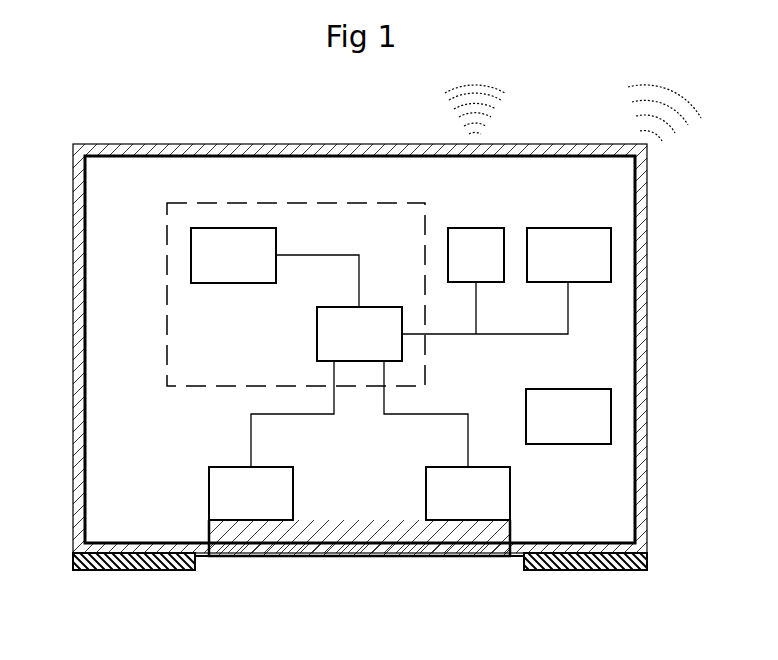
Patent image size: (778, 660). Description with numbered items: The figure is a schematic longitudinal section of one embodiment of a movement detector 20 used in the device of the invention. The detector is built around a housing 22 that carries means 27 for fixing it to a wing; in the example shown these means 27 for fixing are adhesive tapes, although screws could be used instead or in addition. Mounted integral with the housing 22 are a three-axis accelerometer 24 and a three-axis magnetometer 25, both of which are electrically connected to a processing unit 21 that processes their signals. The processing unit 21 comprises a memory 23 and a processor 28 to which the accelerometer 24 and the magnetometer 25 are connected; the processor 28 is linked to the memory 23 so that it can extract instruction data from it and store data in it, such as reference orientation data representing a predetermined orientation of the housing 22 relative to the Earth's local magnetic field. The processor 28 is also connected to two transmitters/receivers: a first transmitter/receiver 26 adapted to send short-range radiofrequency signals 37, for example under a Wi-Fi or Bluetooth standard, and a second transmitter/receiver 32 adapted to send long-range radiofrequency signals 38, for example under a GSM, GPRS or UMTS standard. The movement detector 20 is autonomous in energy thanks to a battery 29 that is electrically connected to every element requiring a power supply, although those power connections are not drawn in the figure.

The movement detector 20 is at (389, 348).
The processing unit 21 is at (319, 275).
The housing 22 is at (73, 316).
The memory 23 is at (233, 255).
The three-axis accelerometer 24 is at (251, 493).
The three-axis magnetometer 25 is at (468, 493).
The first transmitter/receiver 26 is at (569, 255).
The means for fixing 27 is at (132, 571).
The processor 28 is at (359, 334).
The battery 29 is at (568, 416).
The second transmitter/receiver 32 is at (476, 255).
The short-range radiofrequency signals 37 is at (612, 78).
The long-range radiofrequency signals 38 is at (508, 76).